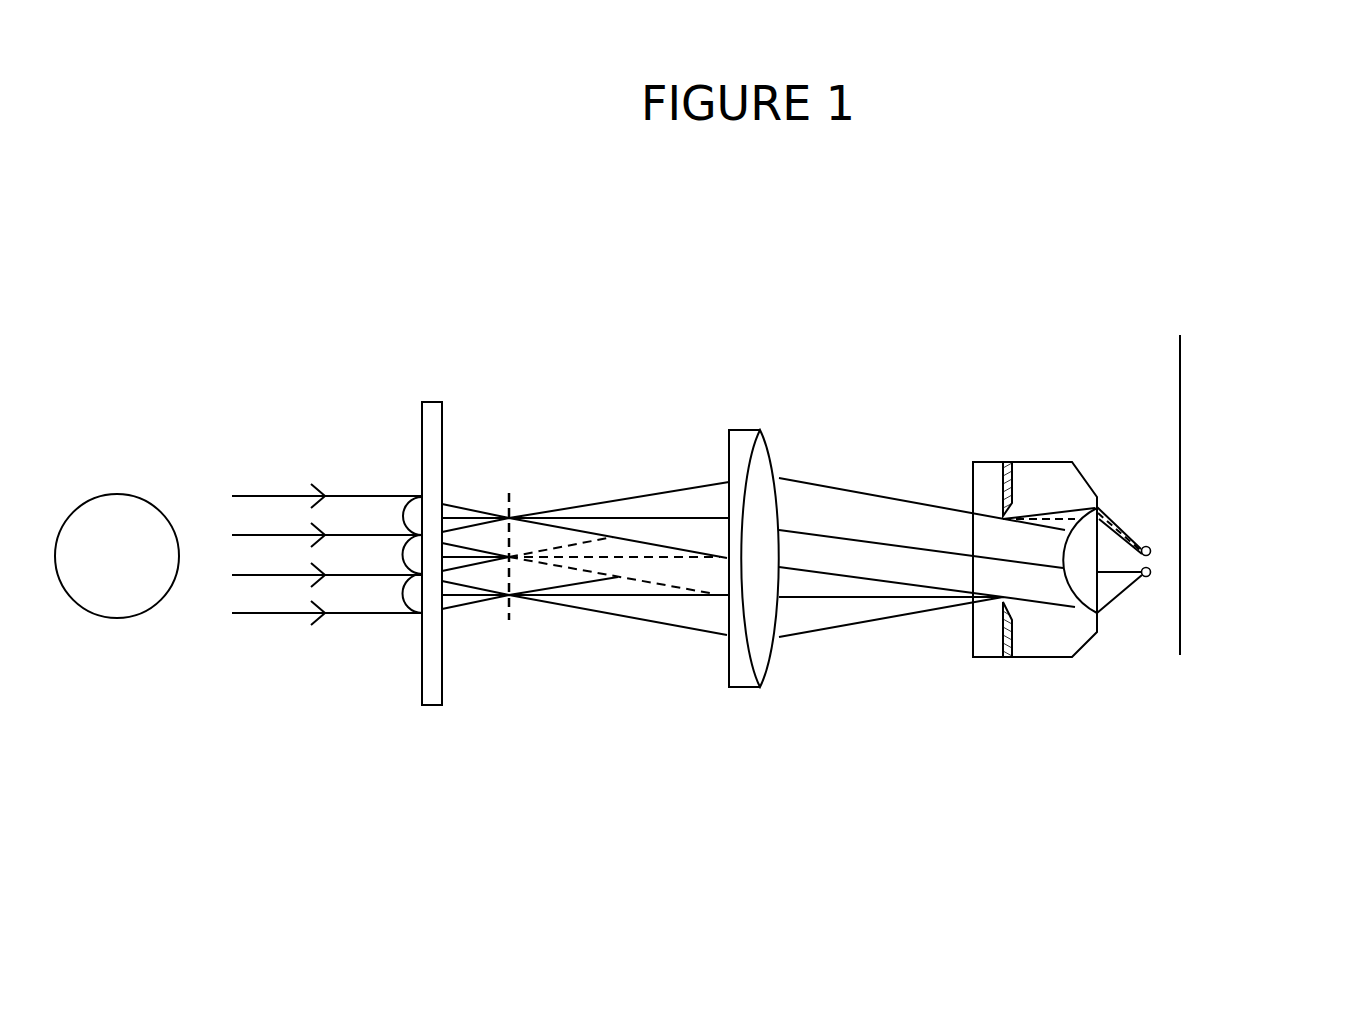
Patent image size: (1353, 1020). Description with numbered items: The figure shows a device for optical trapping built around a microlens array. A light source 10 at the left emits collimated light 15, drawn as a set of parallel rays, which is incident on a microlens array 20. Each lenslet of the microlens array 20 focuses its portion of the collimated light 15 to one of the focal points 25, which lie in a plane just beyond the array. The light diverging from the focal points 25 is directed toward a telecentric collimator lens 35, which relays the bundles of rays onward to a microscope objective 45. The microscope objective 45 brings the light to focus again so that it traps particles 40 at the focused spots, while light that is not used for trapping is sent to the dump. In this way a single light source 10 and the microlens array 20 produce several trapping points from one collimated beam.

The light source 10 is at (117, 556).
The collimated light 15 is at (222, 510).
The microlens array 20 is at (426, 578).
The focal points 25 is at (537, 628).
The telecentric collimator lens 35 is at (754, 587).
The particles 40 is at (1150, 535).
The microscope objective 45 is at (1035, 469).